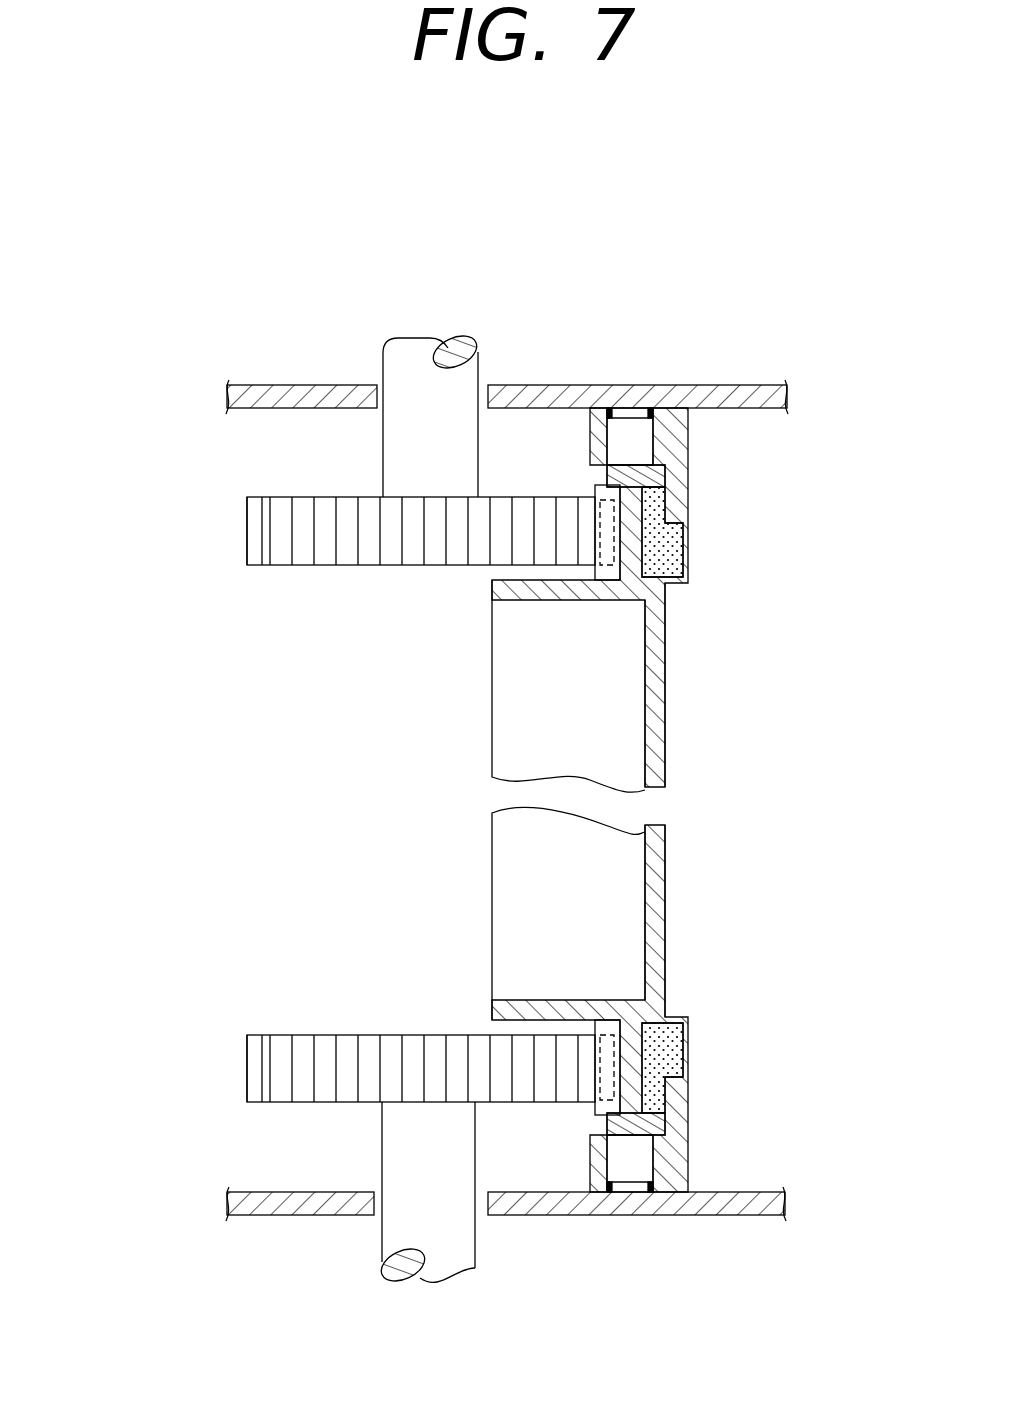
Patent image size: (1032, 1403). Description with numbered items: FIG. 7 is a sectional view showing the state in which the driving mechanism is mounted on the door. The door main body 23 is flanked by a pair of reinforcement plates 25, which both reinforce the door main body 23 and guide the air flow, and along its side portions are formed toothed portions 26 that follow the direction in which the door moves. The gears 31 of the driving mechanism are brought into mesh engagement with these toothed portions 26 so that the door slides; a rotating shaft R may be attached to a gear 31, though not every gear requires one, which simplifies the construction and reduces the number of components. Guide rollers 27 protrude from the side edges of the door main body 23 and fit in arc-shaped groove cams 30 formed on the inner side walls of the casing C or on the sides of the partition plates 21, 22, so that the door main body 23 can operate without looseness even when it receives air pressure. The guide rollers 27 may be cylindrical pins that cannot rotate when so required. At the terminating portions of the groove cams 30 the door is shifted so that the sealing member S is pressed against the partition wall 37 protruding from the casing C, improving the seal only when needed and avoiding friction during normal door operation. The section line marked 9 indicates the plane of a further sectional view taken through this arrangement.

The casing C is at (503, 812).
The partition plate 21 is at (503, 812).
The partition plate 22 is at (255, 383).
The rotating shaft R is at (400, 352).
The gear 31 is at (304, 612).
The partition wall 37 is at (690, 478).
The door main body 23 is at (667, 685).
The reinforcement plate 25 is at (563, 600).
The toothed portion 26 is at (607, 530).
The guide roller 27 is at (639, 427).
The groove cam 30 is at (617, 433).
The sealing member S is at (690, 553).
The section line 9 is at (170, 1070).